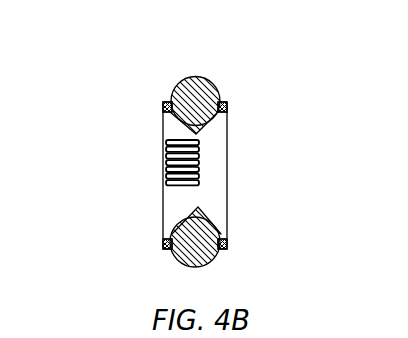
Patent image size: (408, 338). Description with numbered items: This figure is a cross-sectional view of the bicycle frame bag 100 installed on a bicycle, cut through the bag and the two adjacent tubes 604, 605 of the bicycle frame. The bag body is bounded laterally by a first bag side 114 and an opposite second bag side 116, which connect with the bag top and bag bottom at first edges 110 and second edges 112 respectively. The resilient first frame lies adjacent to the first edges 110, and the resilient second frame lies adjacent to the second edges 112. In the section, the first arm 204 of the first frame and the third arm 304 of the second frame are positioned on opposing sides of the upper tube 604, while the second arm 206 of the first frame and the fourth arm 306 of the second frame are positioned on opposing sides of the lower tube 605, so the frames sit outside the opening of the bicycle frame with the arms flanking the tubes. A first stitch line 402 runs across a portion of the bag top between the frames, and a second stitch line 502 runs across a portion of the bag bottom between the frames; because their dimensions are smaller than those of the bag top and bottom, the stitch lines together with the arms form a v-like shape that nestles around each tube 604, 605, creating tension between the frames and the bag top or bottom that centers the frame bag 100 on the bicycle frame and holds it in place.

The bicycle frame bag 100 is at (127, 60).
The second edges 112 is at (166, 101).
The tube 604 is at (198, 82).
The third arm 304 is at (163, 105).
The first edges 110 is at (226, 101).
The first arm 204 is at (229, 106).
The first stitch line 402 is at (198, 135).
The first bag side 114 is at (227, 170).
The second bag side 116 is at (167, 168).
The second stitch line 502 is at (200, 207).
The second arm 206 is at (230, 238).
The fourth arm 306 is at (163, 241).
The tube 605 is at (200, 252).